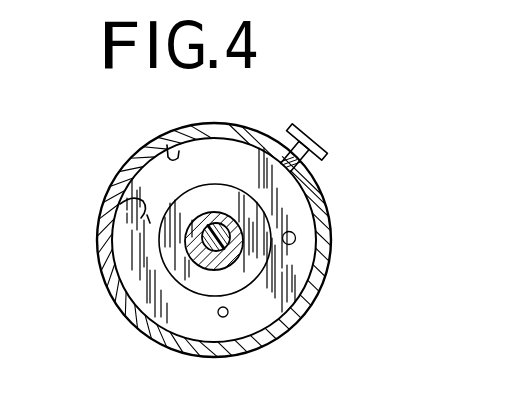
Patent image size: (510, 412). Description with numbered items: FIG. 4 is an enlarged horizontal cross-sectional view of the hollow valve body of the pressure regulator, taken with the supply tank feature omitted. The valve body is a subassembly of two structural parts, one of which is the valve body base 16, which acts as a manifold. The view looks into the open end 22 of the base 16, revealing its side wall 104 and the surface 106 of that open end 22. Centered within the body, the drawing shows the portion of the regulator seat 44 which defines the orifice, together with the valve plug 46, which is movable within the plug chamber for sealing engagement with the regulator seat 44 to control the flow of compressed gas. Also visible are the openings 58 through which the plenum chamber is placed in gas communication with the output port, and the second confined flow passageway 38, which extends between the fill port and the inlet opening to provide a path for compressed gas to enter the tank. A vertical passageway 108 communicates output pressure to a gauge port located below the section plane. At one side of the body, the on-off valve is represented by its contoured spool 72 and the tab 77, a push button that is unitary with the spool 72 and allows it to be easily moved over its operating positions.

The base 16 is at (301, 293).
The open end 22 is at (167, 147).
The second confined flow passageway 38 is at (122, 203).
The regulator seat 44 is at (220, 226).
The valve plug 46 is at (210, 224).
The openings 58 is at (296, 236).
The spool 72 is at (294, 147).
The tab 77 is at (324, 146).
The side wall 104 is at (125, 182).
The surface 106 is at (173, 310).
The vertical passageway 108 is at (226, 317).